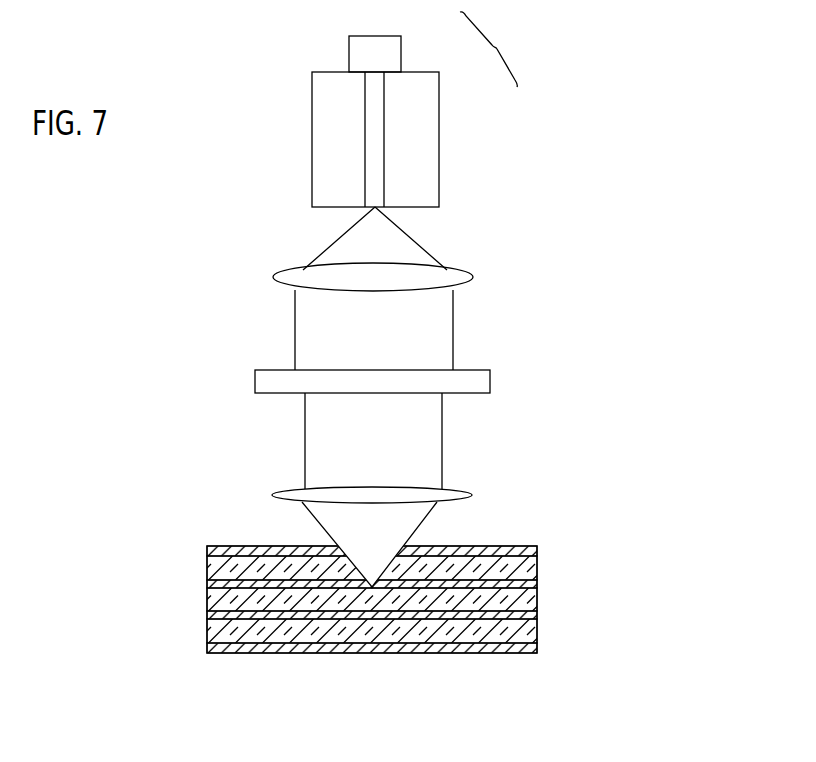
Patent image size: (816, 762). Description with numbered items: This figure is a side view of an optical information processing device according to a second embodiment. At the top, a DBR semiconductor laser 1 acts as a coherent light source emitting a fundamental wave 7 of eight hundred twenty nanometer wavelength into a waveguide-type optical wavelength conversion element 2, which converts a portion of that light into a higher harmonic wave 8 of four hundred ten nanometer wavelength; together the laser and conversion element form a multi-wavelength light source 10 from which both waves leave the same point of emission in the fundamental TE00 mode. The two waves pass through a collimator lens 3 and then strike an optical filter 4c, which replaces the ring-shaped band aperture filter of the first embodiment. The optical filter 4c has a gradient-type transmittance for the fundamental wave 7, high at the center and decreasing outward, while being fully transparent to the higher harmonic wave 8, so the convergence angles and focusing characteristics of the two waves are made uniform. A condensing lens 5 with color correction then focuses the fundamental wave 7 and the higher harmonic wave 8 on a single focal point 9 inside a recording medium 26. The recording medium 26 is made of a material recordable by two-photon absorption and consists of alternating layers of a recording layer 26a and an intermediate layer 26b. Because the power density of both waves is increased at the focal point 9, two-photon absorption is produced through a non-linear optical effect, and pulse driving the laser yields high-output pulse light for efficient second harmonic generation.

The DBR semiconductor laser 1 is at (401, 52).
The waveguide-type optical wavelength conversion element 2 is at (439, 97).
The collimator lens 3 is at (466, 272).
The optical filter 4c is at (490, 376).
The condensing lens 5 is at (468, 493).
The fundamental wave 7 is at (415, 397).
The higher harmonic wave 8 is at (411, 238).
The focal point 9 is at (363, 612).
The multi-wavelength light source 10 is at (490, 49).
The recording medium 26 is at (341, 635).
The recording layer 26a is at (207, 553).
The intermediate layer 26b is at (207, 585).